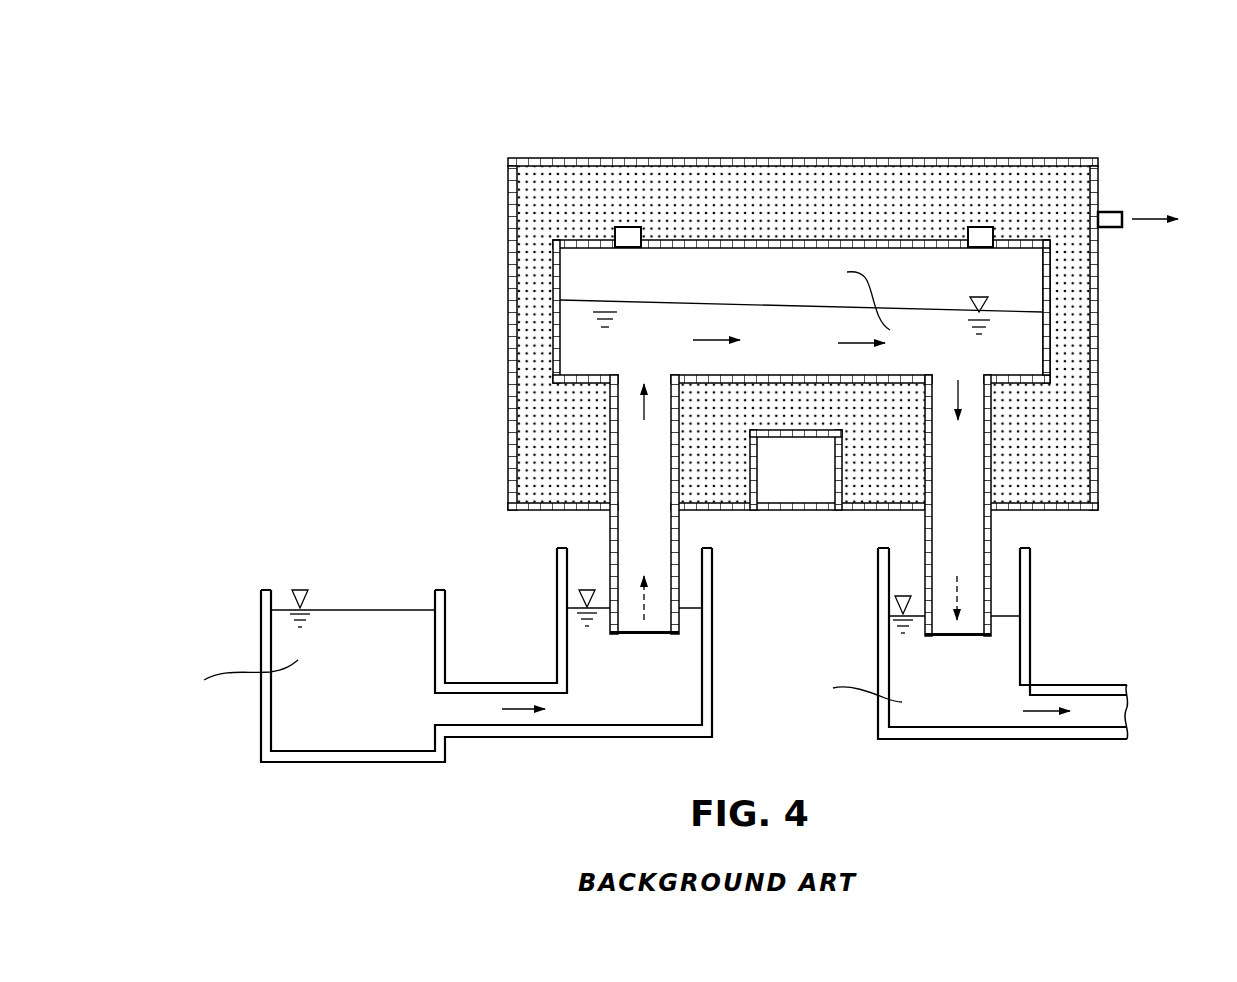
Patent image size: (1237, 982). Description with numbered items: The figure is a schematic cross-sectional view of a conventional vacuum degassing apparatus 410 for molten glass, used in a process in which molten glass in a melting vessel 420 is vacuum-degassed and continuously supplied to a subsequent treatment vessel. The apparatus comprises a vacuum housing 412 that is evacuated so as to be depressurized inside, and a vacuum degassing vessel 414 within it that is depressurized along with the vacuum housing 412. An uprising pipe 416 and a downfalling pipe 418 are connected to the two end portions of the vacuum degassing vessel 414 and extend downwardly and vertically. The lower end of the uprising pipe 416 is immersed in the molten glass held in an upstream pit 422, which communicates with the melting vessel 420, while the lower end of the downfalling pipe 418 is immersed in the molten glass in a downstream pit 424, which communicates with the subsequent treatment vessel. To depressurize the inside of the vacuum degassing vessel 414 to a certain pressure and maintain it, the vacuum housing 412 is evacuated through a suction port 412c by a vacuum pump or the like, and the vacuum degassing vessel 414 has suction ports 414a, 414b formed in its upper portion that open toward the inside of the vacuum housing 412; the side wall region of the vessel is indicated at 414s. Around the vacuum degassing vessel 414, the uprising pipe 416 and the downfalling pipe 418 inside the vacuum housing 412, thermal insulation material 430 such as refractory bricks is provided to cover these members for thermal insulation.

The vacuum degassing apparatus 410 is at (848, 106).
The vacuum housing 412 is at (693, 158).
The suction port 412c is at (1108, 206).
The vacuum degassing vessel 414 is at (745, 237).
The suction port 414a is at (626, 226).
The suction port 414b is at (980, 227).
The chamber side wall 414s is at (1020, 278).
The uprising pipe 416 is at (680, 556).
The downfalling pipe 418 is at (990, 470).
The melting vessel 420 is at (262, 606).
The upstream pit 422 is at (712, 595).
The downstream pit 424 is at (1025, 595).
The thermal insulation material 430 is at (548, 420).